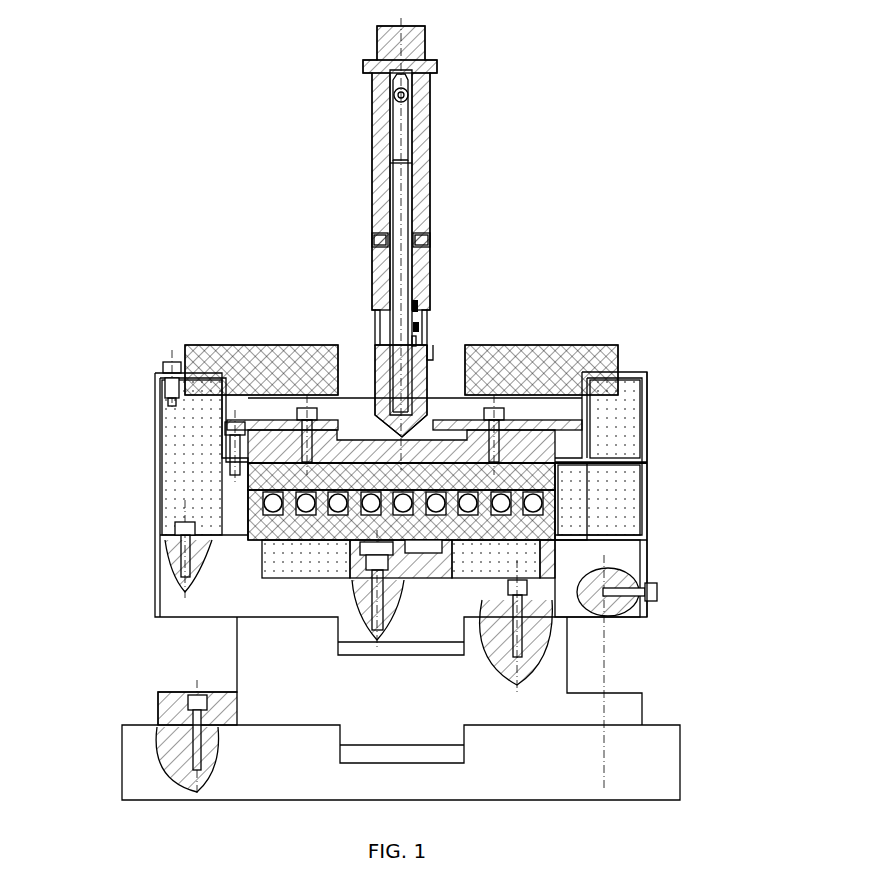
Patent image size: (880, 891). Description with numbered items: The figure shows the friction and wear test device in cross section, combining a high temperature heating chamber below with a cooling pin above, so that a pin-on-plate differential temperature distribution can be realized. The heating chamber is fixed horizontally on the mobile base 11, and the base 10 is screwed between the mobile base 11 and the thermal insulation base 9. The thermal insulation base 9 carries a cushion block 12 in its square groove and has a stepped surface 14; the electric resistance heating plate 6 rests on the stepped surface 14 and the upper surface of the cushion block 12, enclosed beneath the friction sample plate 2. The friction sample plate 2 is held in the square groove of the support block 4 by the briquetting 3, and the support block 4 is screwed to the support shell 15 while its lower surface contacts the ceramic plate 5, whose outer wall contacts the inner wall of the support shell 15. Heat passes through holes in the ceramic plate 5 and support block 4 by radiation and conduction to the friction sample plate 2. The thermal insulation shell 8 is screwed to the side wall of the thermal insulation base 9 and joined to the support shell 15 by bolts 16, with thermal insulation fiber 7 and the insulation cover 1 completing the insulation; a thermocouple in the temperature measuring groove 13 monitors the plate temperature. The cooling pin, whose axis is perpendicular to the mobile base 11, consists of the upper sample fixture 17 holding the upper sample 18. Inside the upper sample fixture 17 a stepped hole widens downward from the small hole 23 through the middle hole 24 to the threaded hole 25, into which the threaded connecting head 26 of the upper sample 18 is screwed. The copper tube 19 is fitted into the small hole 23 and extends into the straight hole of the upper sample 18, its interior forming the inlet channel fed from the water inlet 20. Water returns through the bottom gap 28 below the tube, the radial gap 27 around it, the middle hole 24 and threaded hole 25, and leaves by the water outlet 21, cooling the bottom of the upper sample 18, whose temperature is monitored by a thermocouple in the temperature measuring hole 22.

The insulation cover 1 is at (401, 335).
The friction sample plate 2 is at (409, 361).
The briquetting 3 is at (425, 345).
The support block 4 is at (593, 438).
The ceramic plate 5 is at (654, 440).
The electric resistance heating plate 6 is at (500, 488).
The thermal insulation fiber 7 is at (508, 550).
The thermal insulation shell 8 is at (654, 551).
The thermal insulation base 9 is at (665, 565).
The base 10 is at (455, 704).
The mobile base 11 is at (437, 761).
The cushion block 12 is at (348, 528).
The temperature measuring groove 13 is at (505, 450).
The stepped surface 14 is at (152, 486).
The support shell 15 is at (149, 495).
The bolt 16 is at (115, 380).
The upper sample fixture 17 is at (367, 185).
The upper sample 18 is at (361, 326).
The copper tube 19 is at (355, 242).
The water inlet 20 is at (352, 91).
The water outlet 21 is at (343, 229).
The temperature measuring hole 22 is at (361, 379).
The small hole 23 is at (449, 243).
The middle hole 24 is at (457, 244).
The threaded hole 25 is at (458, 281).
The connecting head 26 is at (459, 306).
The radial gap 27 is at (458, 325).
The bottom gap 28 is at (466, 341).